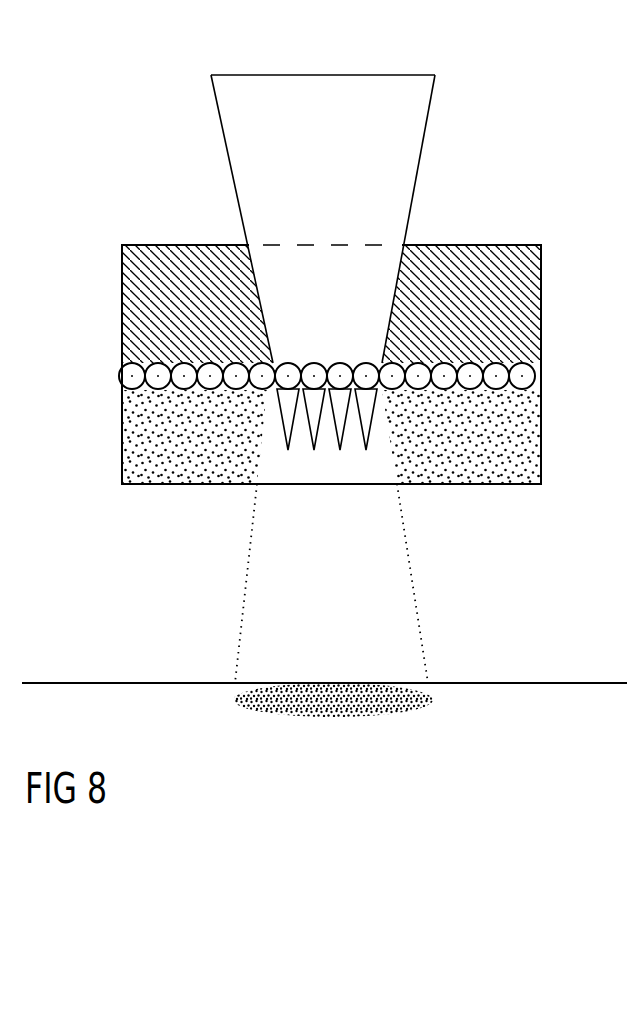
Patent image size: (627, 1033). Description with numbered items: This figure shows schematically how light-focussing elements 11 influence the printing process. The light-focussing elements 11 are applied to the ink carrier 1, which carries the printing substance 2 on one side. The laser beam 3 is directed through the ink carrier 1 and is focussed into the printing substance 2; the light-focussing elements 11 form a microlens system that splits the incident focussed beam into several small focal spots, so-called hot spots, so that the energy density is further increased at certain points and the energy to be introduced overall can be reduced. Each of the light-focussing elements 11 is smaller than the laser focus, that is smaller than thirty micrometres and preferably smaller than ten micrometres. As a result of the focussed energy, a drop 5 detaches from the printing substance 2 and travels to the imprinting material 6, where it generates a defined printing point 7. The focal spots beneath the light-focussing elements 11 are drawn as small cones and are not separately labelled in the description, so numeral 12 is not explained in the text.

The ink carrier 1 is at (182, 258).
The printing substance 2 is at (175, 433).
The laser beam 3 is at (380, 115).
The drop 5 is at (365, 525).
The imprinting material 6 is at (497, 695).
The printing point 7 is at (348, 715).
The light-focussing elements 11 is at (392, 390).
The focused light cones 12 is at (297, 465).